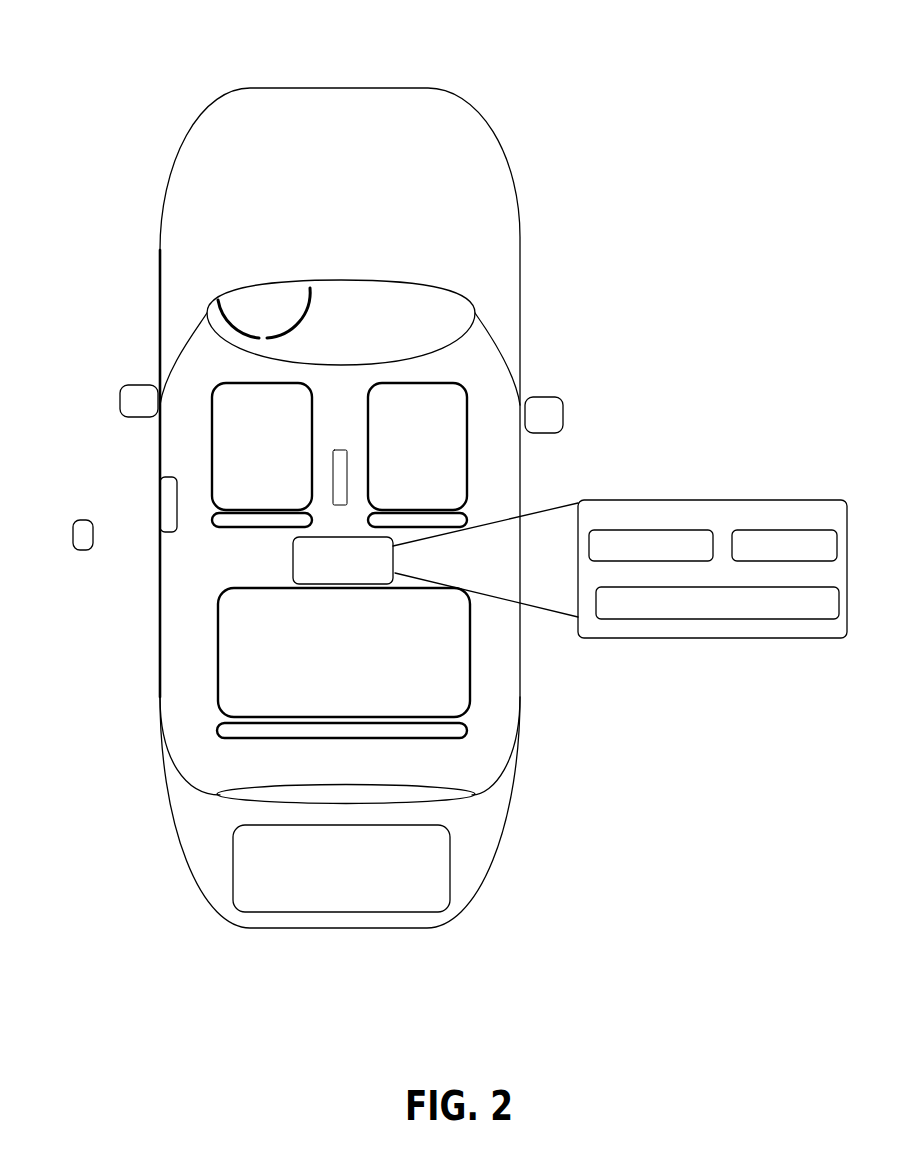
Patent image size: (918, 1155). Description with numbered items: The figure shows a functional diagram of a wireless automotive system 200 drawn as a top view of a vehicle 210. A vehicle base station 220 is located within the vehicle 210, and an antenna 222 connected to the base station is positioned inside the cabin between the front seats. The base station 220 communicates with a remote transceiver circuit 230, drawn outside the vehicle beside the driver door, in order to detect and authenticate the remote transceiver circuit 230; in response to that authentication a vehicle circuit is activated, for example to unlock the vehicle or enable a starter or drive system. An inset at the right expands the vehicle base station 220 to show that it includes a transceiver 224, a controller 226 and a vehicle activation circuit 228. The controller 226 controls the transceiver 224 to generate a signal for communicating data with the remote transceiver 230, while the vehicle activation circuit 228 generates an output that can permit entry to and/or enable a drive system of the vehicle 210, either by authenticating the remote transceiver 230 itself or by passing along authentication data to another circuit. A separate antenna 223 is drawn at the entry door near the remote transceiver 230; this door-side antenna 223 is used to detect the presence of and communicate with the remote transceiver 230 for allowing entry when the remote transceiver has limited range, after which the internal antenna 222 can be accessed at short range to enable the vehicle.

The wireless automotive system 200 is at (740, 36).
The vehicle 210 is at (478, 138).
The vehicle base station 220 is at (315, 537).
The antenna 222 is at (330, 468).
The separate antenna 223 is at (167, 476).
The transceiver 224 is at (701, 530).
The controller 226 is at (824, 530).
The vehicle activation circuit 228 is at (826, 587).
The remote transceiver circuit 230 is at (88, 520).